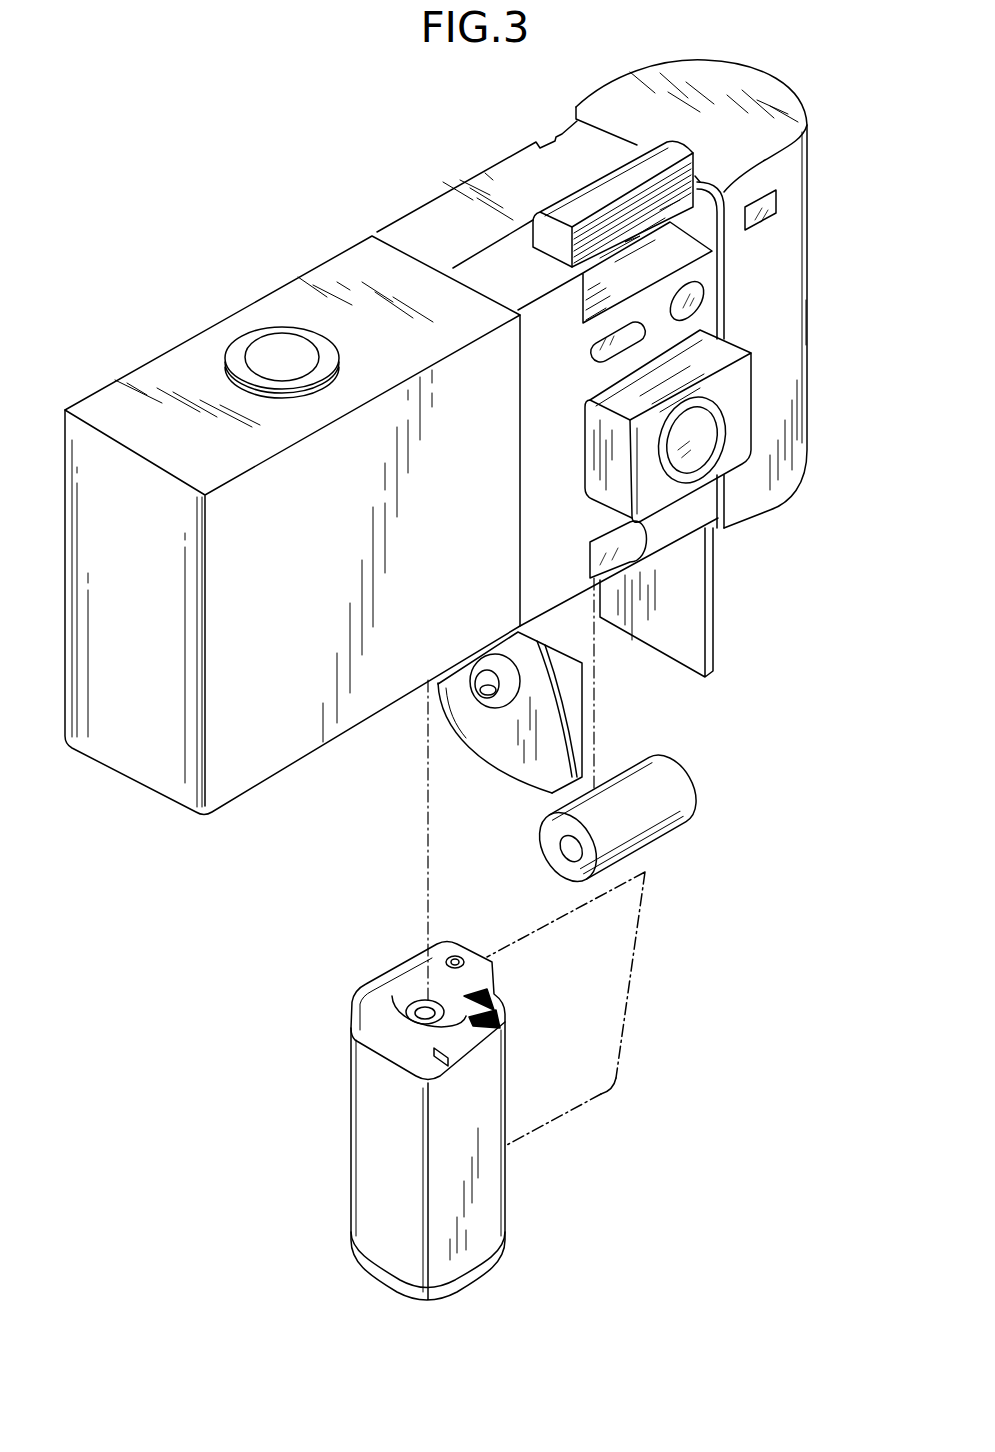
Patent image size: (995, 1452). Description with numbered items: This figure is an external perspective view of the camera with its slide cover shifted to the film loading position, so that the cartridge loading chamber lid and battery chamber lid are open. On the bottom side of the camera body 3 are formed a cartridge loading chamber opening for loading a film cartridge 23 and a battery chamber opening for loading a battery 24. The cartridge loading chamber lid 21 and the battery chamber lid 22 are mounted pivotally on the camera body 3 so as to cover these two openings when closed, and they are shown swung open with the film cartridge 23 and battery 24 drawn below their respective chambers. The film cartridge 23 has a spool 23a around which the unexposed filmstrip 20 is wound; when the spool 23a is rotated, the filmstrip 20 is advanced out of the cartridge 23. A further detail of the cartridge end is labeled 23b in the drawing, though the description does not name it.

The camera body 3 is at (780, 252).
The filmstrip 20 is at (605, 1017).
The cartridge loading chamber lid 21 is at (505, 745).
The battery chamber lid 22 is at (674, 607).
The film cartridge 23 is at (487, 1192).
The spool 23a is at (419, 1003).
The terminal hole 23b is at (448, 1000).
The battery 24 is at (647, 820).